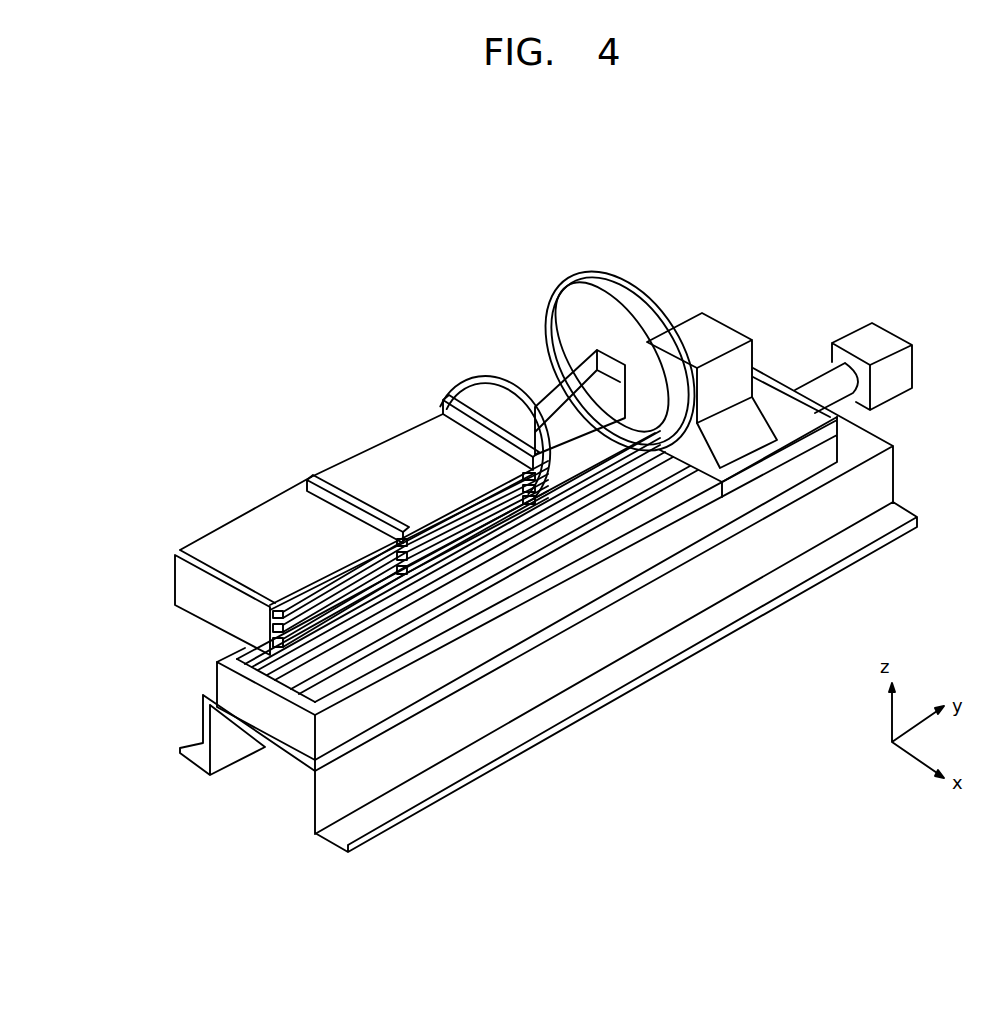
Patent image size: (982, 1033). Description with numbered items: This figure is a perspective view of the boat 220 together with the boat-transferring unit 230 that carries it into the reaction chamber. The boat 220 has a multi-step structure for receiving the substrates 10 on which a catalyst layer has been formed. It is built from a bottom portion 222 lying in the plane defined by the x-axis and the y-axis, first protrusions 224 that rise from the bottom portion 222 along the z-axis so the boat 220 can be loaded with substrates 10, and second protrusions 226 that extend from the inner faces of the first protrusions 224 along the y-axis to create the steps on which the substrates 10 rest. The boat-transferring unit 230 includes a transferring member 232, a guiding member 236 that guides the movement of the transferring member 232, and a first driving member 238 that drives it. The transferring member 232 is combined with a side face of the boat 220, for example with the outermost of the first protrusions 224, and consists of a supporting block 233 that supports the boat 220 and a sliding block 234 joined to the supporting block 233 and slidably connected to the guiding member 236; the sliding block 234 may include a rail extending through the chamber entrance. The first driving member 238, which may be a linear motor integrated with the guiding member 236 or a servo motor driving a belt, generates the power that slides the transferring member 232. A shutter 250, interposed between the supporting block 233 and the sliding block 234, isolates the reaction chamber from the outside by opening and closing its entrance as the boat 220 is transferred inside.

The substrate 10 is at (390, 451).
The boat 220 is at (380, 599).
The bottom portion 222 is at (352, 618).
The first protrusions 224 is at (272, 624).
The second protrusions 226 is at (272, 608).
The boat-transferring unit 230 is at (657, 309).
The transferring member 232 is at (512, 296).
The supporting block 233 is at (455, 386).
The sliding block 234 is at (770, 405).
The guiding member 236 is at (520, 623).
The first driving member 238 is at (885, 340).
The shutter 250 is at (590, 302).